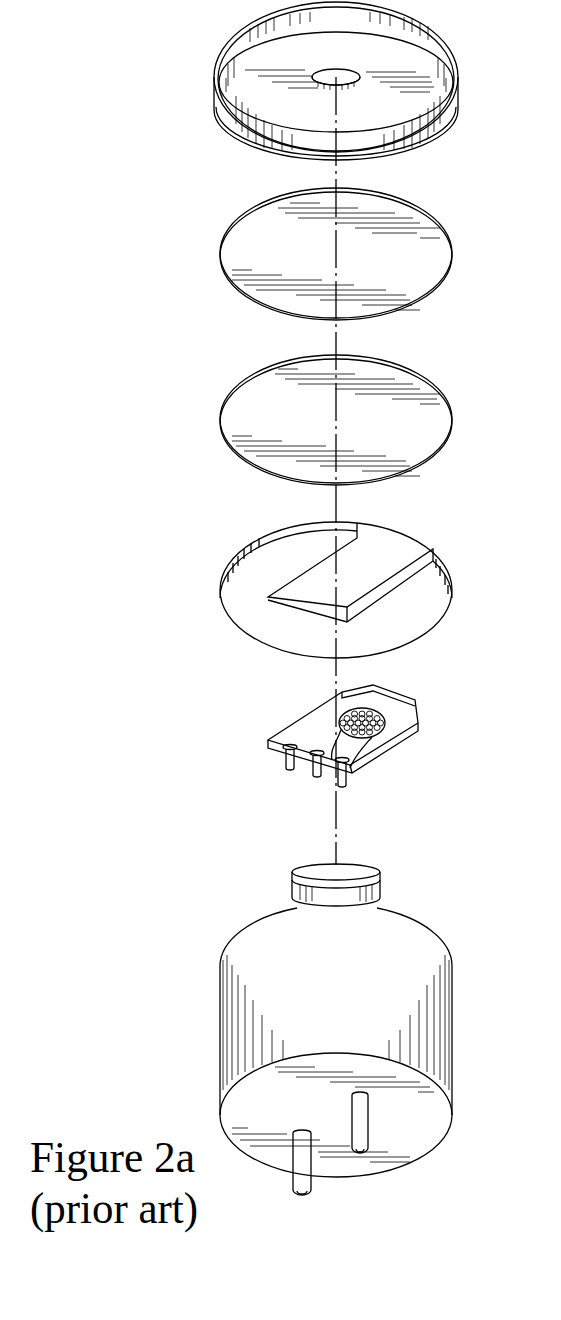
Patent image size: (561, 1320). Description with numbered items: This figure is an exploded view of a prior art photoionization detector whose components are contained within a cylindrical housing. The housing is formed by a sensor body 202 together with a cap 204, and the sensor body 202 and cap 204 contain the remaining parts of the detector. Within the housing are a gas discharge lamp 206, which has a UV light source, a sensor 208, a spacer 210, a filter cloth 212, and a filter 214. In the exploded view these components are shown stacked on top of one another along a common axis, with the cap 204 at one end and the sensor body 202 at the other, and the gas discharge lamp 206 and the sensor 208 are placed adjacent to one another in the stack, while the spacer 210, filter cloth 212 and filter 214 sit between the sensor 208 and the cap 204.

The sensor body 202 is at (228, 1008).
The cap 204 is at (216, 68).
The gas discharge lamp 206 is at (295, 884).
The sensor 208 is at (288, 723).
The spacer 210 is at (240, 550).
The filter cloth 212 is at (235, 400).
The filter 214 is at (228, 245).